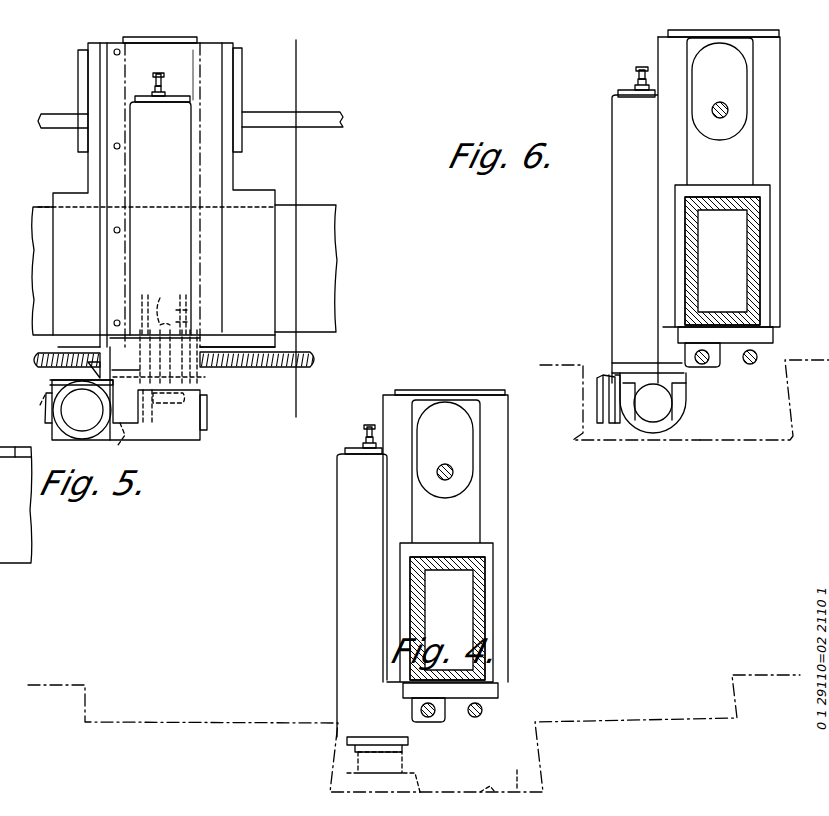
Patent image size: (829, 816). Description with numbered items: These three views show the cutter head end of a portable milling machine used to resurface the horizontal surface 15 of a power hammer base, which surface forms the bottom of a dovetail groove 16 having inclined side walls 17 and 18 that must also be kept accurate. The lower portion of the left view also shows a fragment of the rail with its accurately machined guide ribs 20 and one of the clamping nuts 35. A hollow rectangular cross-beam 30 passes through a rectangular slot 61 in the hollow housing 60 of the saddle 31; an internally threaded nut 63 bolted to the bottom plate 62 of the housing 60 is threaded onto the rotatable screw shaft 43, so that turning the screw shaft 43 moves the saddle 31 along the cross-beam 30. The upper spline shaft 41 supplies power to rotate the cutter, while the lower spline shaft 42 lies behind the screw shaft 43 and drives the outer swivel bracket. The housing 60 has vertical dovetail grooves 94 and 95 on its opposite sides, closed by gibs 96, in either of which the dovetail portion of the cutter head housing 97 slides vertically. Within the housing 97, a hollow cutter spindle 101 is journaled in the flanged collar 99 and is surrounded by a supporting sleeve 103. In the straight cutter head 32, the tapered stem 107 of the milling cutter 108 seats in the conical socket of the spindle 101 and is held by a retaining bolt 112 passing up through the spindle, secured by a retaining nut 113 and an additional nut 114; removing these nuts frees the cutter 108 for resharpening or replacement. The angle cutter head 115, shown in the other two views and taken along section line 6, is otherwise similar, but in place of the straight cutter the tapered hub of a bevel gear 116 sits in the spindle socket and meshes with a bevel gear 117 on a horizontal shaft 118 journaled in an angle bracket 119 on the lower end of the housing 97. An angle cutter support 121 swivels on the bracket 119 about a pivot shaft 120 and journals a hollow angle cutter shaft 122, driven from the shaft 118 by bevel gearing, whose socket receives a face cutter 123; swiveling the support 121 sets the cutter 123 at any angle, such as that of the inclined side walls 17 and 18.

In FIG. 5, the section line 6 is at (296, 40).
In FIG. 4, the horizontal surface 15 is at (490, 792).
In FIG. 4, the dovetail groove 16 is at (523, 771).
In FIG. 5, the inclined side wall 17 is at (45, 395).
In FIG. 4, the inclined side wall 17 is at (338, 760).
In FIG. 6, the inclined side wall 17 is at (572, 366).
In FIG. 4, the inclined side wall 18 is at (538, 738).
In FIG. 6, the inclined side wall 18 is at (780, 402).
In FIG. 5, the guide ribs 20 is at (16, 458).
In FIG. 5, the cross-beam 30 is at (306, 203).
In FIG. 4, the cross-beam 30 is at (490, 603).
In FIG. 6, the cross-beam 30 is at (688, 247).
In FIG. 5, the saddle 31 is at (70, 198).
In FIG. 4, the saddle 31 is at (508, 522).
In FIG. 6, the saddle 31 is at (685, 203).
In FIG. 4, the cutter head 32 is at (345, 622).
In FIG. 5, the nuts 35 is at (16, 468).
In FIG. 5, the upper spline shaft 41 is at (319, 112).
In FIG. 4, the upper spline shaft 41 is at (445, 464).
In FIG. 6, the upper spline shaft 41 is at (720, 102).
In FIG. 4, the lower spline shaft 42 is at (483, 711).
In FIG. 6, the lower spline shaft 42 is at (750, 365).
In FIG. 5, the screw shaft 43 is at (312, 368).
In FIG. 4, the screw shaft 43 is at (428, 718).
In FIG. 6, the screw shaft 43 is at (703, 365).
In FIG. 5, the hollow housing 60 is at (262, 266).
In FIG. 4, the hollow housing 60 is at (508, 455).
In FIG. 6, the hollow housing 60 is at (719, 178).
In FIG. 4, the slot 61 is at (480, 582).
In FIG. 6, the slot 61 is at (692, 272).
In FIG. 5, the bottom plate 62 is at (285, 341).
In FIG. 4, the bottom plate 62 is at (490, 690).
In FIG. 6, the bottom plate 62 is at (766, 334).
In FIG. 4, the internally threaded nut 63 is at (445, 720).
In FIG. 6, the internally threaded nut 63 is at (712, 360).
In FIG. 5, the vertical dovetail groove 94 is at (195, 60).
In FIG. 5, the vertical dovetail groove 95 is at (130, 45).
In FIG. 5, the gibs 96 is at (113, 85).
In FIG. 5, the housing 97 is at (160, 218).
In FIG. 4, the housing 97 is at (350, 545).
In FIG. 5, the flanged collar 99 is at (178, 96).
In FIG. 5, the hollow cutter spindle 101 is at (195, 298).
In FIG. 5, the sleeve 103 is at (195, 312).
In FIG. 5, the tapered stem 107 is at (177, 358).
In FIG. 4, the milling cutter 108 is at (422, 792).
In FIG. 5, the retaining bolt 112 is at (167, 302).
In FIG. 5, the retaining nut 113 is at (155, 90).
In FIG. 4, the retaining nut 113 is at (363, 445).
In FIG. 6, the retaining nut 113 is at (636, 82).
In FIG. 5, the additional nut 114 is at (156, 75).
In FIG. 4, the additional nut 114 is at (366, 428).
In FIG. 6, the additional nut 114 is at (640, 68).
In FIG. 5, the angle cutter head 115 is at (202, 175).
In FIG. 6, the angle cutter head 115 is at (612, 204).
In FIG. 5, the bevel gear 116 is at (176, 409).
In FIG. 5, the bevel gear 117 is at (150, 425).
In FIG. 5, the horizontal shaft 118 is at (132, 447).
In FIG. 5, the angle bracket 119 is at (116, 430).
In FIG. 5, the pivot shaft 120 is at (207, 415).
In FIG. 6, the pivot shaft 120 is at (654, 423).
In FIG. 5, the angle cutter support 121 is at (86, 433).
In FIG. 6, the angle cutter support 121 is at (630, 432).
In FIG. 6, the hollow angle cutter shaft 122 is at (602, 425).
In FIG. 6, the face cutter 123 is at (600, 375).